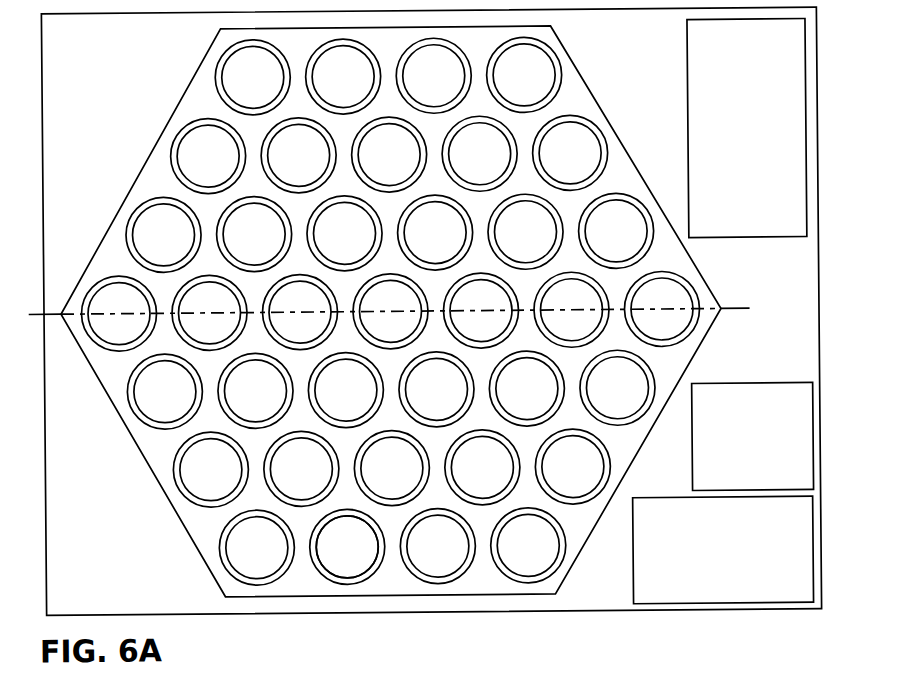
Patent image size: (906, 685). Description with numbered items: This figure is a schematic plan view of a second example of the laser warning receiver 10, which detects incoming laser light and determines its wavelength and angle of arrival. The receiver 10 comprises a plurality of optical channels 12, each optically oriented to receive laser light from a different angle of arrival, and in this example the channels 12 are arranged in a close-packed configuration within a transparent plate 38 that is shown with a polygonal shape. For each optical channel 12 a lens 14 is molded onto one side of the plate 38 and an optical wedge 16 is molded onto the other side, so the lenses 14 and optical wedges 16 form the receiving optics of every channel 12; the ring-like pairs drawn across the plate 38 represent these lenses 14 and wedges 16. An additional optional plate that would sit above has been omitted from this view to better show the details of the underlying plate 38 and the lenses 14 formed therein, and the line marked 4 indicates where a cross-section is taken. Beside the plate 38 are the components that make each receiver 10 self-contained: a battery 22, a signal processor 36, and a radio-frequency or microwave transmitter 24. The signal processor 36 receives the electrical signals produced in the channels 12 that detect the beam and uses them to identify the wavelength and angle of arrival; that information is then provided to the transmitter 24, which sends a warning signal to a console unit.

The laser warning receiver 10 is at (466, 614).
The optical channel 12 is at (180, 430).
The lens 14 is at (279, 569).
The optical wedge 16 is at (369, 578).
The battery 22 is at (747, 128).
The transmitter 24 is at (723, 550).
The signal processor 36 is at (753, 436).
The transparent plate 38 is at (190, 534).
The section line 4- 4 is at (29, 311).